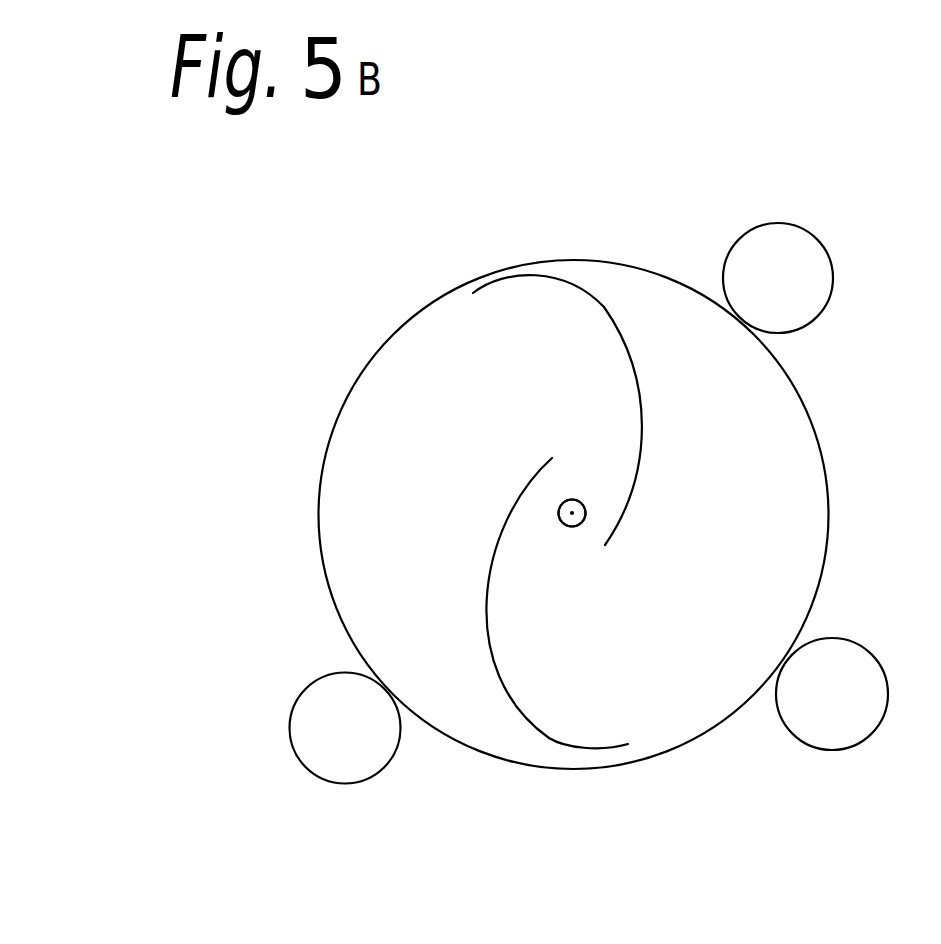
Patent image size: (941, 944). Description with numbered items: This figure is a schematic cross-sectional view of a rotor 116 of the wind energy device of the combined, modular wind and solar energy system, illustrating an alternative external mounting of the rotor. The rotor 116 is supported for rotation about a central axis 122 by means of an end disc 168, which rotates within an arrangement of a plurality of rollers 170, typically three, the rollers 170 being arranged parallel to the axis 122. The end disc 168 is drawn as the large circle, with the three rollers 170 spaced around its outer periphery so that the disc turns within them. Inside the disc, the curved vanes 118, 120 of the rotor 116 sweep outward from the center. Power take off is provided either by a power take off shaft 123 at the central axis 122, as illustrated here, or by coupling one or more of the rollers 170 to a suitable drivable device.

The impeller assembly 116 is at (165, 571).
The first vane 118 is at (604, 305).
The second vane 120 is at (549, 739).
The hub 122 is at (581, 522).
The center axis 123 is at (562, 502).
The disc 168 is at (782, 431).
The mounting holes 170 is at (765, 242).